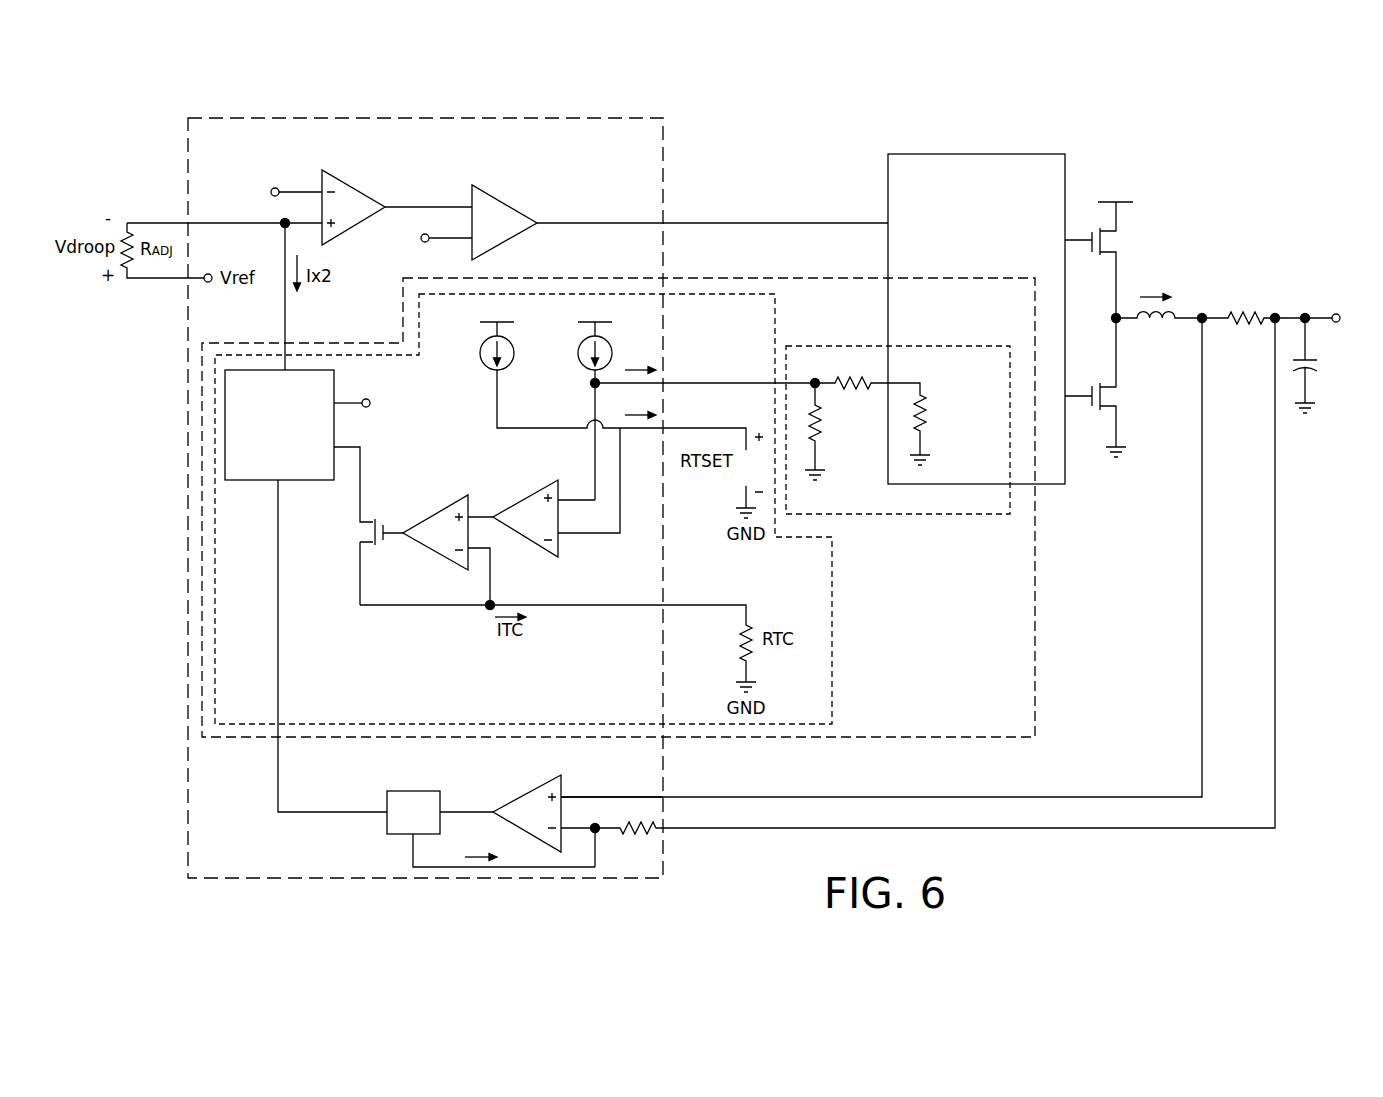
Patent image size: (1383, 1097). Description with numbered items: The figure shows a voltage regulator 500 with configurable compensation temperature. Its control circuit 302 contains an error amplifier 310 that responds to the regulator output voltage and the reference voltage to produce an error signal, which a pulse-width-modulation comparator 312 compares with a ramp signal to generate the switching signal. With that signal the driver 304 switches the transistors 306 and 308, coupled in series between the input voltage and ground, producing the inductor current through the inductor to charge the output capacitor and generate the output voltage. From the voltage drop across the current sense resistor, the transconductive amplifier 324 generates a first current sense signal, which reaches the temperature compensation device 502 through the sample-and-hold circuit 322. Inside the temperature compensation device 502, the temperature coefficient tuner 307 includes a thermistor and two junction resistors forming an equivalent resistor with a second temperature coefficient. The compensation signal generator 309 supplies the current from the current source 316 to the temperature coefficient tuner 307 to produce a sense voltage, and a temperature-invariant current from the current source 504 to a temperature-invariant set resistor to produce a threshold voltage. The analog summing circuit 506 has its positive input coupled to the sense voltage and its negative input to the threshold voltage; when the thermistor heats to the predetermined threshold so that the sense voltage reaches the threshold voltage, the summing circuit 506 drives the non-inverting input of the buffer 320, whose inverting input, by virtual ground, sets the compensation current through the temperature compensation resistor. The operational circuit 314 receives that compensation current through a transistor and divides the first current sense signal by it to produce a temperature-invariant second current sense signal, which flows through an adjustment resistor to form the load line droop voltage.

The control circuit 302 is at (663, 172).
The driver 304 is at (970, 154).
The transistor 306 is at (1131, 239).
The transistor 308 is at (1131, 402).
The error amplifier 310 is at (355, 180).
The PWM comparator 312 is at (505, 196).
The operational circuit 314 is at (306, 481).
The current source 316 is at (578, 350).
The buffer 320 is at (435, 512).
The sample-and-hold circuit 322 is at (413, 790).
The transconductive amplifier 324 is at (530, 797).
The temperature coefficient tuner 307 is at (975, 515).
The compensation signal generator 309 is at (832, 612).
The voltage regulator 500 is at (1262, 170).
The temperature compensation device 502 is at (1035, 615).
The current source 504 is at (478, 350).
The analog summing circuit 506 is at (523, 498).